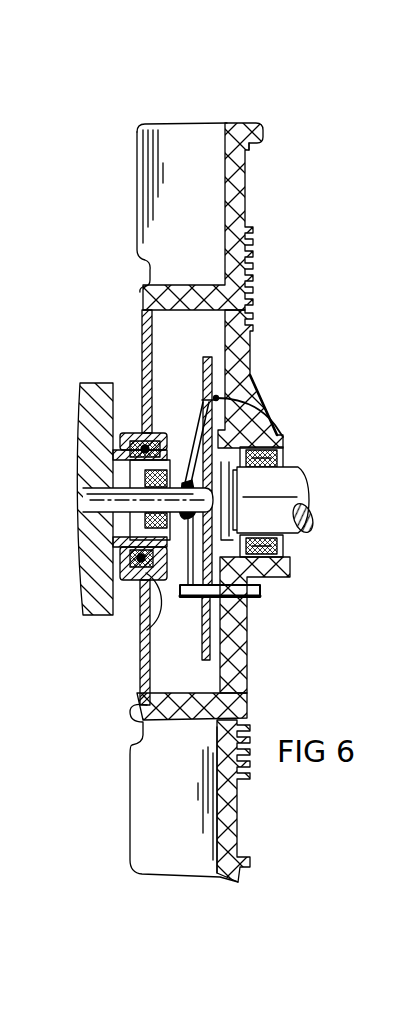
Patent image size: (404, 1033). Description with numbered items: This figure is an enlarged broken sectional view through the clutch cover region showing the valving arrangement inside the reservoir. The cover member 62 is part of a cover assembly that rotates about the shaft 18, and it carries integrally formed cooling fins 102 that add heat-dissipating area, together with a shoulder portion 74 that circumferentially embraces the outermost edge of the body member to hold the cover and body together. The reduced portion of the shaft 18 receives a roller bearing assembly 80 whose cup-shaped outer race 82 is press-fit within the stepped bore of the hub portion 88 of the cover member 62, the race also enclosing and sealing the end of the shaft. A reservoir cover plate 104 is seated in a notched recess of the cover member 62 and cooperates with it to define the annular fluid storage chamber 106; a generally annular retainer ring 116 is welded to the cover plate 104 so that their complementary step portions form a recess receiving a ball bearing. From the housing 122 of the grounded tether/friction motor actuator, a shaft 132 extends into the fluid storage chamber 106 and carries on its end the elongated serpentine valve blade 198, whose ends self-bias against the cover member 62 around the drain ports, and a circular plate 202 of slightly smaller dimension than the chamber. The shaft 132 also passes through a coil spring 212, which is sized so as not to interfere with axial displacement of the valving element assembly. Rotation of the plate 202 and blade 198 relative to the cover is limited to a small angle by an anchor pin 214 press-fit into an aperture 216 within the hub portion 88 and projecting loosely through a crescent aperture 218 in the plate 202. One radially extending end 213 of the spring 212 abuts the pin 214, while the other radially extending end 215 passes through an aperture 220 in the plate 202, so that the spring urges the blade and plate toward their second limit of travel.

The cover member 62 is at (170, 153).
The reservoir cover plate 104 is at (145, 302).
The hub portion 88 is at (278, 418).
The radially extending end 215 is at (245, 398).
The valve blade 198 is at (146, 372).
The circular plate 202 is at (205, 353).
The aperture 220 is at (195, 437).
The housing 122 is at (85, 437).
The retainer ring 116 is at (145, 630).
The coil spring 212 is at (97, 495).
The shaft 132 is at (87, 505).
The outer race 82 is at (283, 452).
The shaft 18 is at (300, 493).
The roller bearing assembly 80 is at (287, 540).
The crescent aperture 218 is at (248, 620).
The aperture 216 is at (262, 594).
The anchor pin 214 is at (200, 597).
The radially extending end 213 is at (205, 628).
The fluid storage chamber 106 is at (200, 690).
The shoulder portion 74 is at (255, 860).
The cooling fins 102 is at (150, 818).